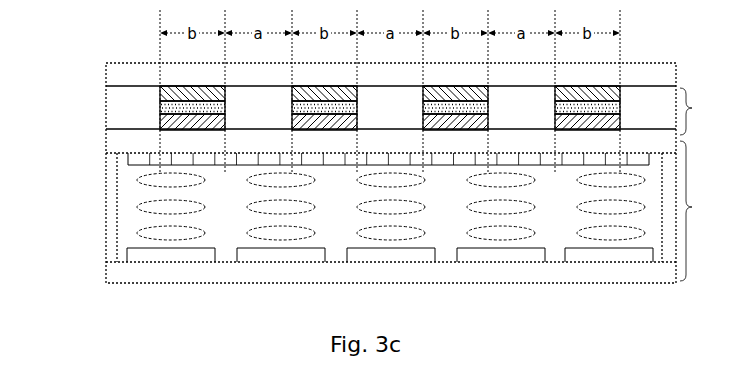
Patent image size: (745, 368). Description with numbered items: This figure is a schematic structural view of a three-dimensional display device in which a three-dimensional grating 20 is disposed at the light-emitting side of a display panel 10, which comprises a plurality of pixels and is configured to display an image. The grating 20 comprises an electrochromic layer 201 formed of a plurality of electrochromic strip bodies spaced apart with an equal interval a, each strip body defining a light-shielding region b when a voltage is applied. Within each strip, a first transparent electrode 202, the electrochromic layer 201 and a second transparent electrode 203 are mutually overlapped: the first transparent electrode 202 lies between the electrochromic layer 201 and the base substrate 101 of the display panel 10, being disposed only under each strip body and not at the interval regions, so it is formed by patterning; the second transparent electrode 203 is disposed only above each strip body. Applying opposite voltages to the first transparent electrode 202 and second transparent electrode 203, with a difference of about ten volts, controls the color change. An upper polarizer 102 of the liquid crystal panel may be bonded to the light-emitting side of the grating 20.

The upper polarizer 102 is at (349, 73).
The second transparent electrode 203 is at (160, 92).
The electrochromic layer 201 is at (160, 107).
The first transparent electrode 202 is at (160, 123).
The base substrate 101 is at (106, 142).
The 3D grating 20 is at (414, 110).
The display panel 10 is at (414, 211).